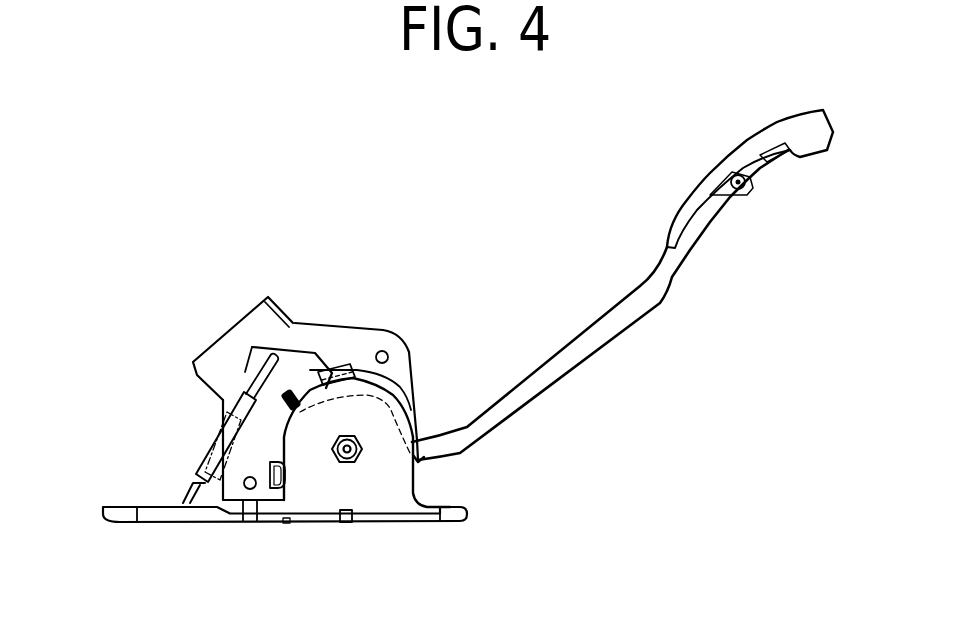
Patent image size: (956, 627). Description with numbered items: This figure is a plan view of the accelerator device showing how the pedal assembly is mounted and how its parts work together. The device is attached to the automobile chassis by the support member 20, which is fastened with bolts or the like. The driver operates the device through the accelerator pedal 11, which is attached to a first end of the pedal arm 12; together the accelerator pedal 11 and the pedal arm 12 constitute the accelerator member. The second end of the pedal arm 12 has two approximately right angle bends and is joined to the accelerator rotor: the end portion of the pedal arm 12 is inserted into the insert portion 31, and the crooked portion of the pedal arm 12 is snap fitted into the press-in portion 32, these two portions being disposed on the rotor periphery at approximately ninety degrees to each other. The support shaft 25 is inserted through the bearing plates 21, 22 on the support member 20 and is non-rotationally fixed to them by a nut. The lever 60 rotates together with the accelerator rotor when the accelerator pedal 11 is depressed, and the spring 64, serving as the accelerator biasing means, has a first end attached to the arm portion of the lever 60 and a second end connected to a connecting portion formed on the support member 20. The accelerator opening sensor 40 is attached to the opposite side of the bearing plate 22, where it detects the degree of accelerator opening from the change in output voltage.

The accelerator pedal 11 is at (700, 175).
The pedal arm 12 is at (636, 321).
The support member 20 is at (107, 522).
The bearing plate 21 is at (282, 435).
The bearing plate 22 is at (376, 331).
The support shaft 25 is at (358, 458).
The insert portion 31 is at (340, 365).
The press-in portion 32 is at (418, 466).
The accelerator opening sensor 40 is at (263, 298).
The lever 60 is at (298, 323).
The spring 64 is at (190, 455).